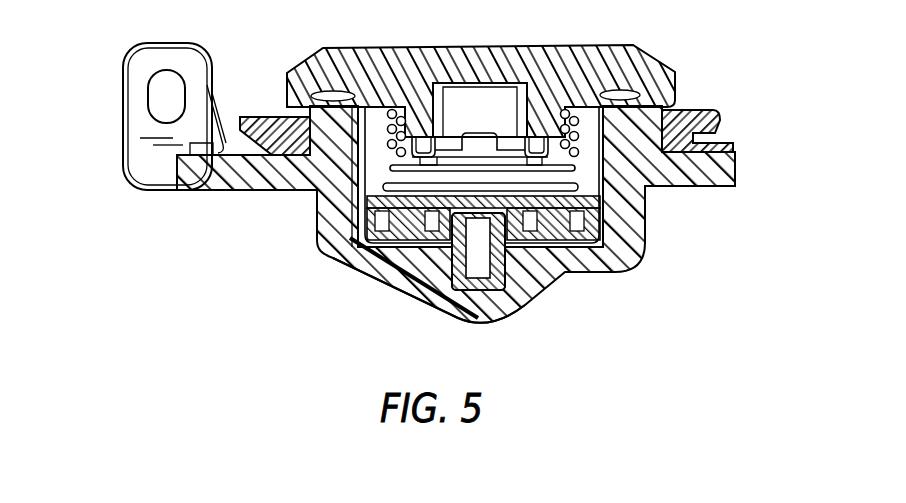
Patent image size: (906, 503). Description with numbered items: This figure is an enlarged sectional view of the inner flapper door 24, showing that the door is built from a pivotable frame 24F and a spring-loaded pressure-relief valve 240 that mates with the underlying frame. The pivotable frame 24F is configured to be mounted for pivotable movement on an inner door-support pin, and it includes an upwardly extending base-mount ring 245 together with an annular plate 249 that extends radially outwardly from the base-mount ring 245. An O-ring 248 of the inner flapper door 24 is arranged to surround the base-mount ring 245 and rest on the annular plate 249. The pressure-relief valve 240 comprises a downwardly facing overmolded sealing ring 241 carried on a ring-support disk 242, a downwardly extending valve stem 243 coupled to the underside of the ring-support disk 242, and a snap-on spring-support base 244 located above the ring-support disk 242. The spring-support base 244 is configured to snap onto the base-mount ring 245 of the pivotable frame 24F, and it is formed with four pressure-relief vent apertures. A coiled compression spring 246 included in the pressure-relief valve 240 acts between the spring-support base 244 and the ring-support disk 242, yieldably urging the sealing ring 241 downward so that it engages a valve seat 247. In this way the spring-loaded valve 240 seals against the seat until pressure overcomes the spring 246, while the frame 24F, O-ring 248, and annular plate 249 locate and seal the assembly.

The inner flapper door 24 is at (732, 61).
The pivotable frame 24F is at (118, 182).
The spring-loaded pressure-relief valve 240 is at (368, 157).
The overmolded sealing ring 241 is at (368, 238).
The ring-support disk 242 is at (370, 208).
The pin 243 is at (497, 267).
The spring-support base 244 is at (657, 38).
The base-mount ring 245 is at (297, 120).
The coiled compression spring 246 is at (587, 130).
The valve seat 247 is at (400, 240).
The O-ring 248 is at (724, 116).
The annular plate 249 is at (730, 170).